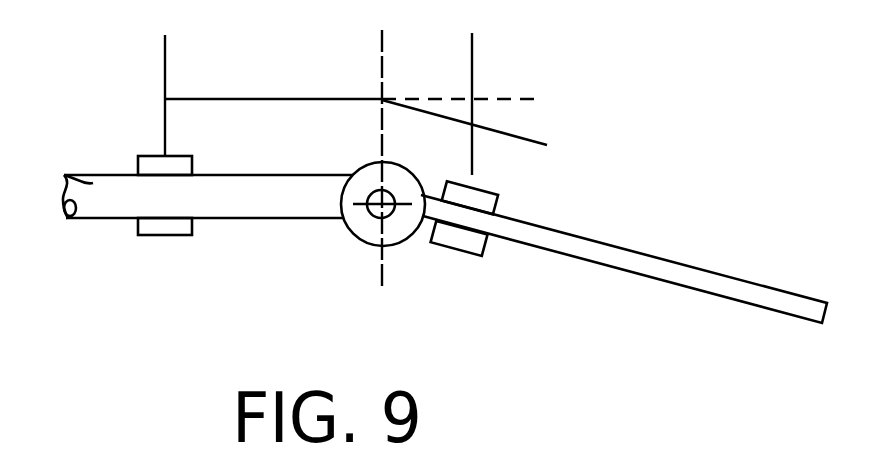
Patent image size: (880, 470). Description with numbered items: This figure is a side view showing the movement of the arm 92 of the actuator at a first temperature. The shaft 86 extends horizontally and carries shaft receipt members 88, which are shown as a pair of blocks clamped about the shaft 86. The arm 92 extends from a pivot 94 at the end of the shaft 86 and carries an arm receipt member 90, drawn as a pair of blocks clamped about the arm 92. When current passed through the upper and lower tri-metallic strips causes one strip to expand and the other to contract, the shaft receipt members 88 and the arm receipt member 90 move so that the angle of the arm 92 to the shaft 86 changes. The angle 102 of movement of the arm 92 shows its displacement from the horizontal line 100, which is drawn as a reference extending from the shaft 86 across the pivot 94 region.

The shaft 86 is at (66, 176).
The shaft receipt members 88 is at (192, 172).
The arm receipt member 90 is at (473, 200).
The arm 92 is at (676, 276).
The pivot 94 is at (403, 242).
The horizontal line 100 is at (235, 99).
The angle 102 is at (520, 32).